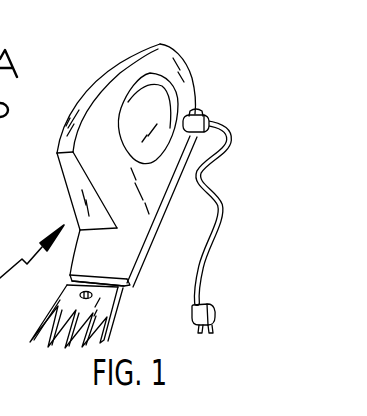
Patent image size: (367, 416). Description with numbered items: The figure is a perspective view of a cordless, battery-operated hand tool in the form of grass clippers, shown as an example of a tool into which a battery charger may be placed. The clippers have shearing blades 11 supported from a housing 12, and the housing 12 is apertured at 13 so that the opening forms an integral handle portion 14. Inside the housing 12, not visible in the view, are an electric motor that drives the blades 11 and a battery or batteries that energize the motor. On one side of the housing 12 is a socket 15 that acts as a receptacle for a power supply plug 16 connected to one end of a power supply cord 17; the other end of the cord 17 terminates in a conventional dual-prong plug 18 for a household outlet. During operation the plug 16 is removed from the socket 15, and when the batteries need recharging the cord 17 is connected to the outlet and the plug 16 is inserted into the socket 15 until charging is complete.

The shearing blades 11 is at (67, 342).
The housing 12 is at (141, 232).
The aperture 13 is at (153, 102).
The integral handle portion 14 is at (110, 102).
The socket 15 is at (199, 113).
The power supply plug 16 is at (209, 114).
The power supply cord 17 is at (203, 246).
The dual-prong plug 18 is at (192, 316).